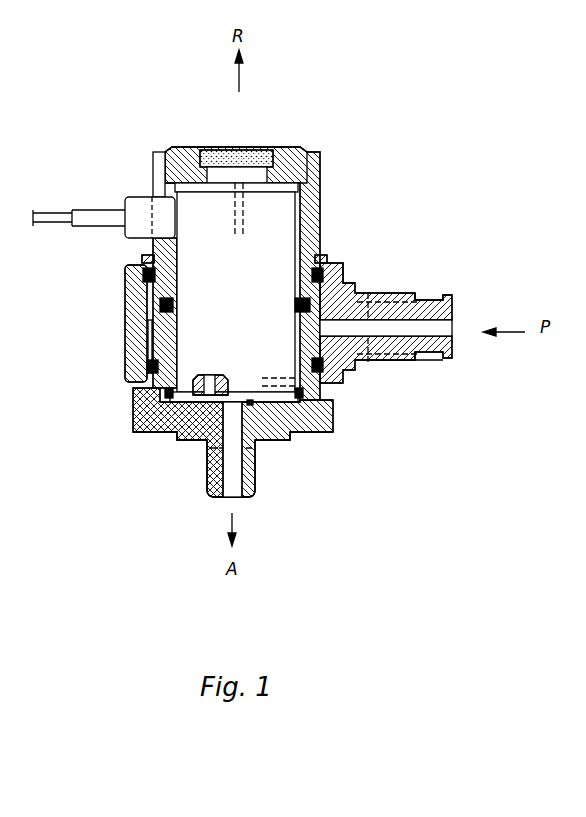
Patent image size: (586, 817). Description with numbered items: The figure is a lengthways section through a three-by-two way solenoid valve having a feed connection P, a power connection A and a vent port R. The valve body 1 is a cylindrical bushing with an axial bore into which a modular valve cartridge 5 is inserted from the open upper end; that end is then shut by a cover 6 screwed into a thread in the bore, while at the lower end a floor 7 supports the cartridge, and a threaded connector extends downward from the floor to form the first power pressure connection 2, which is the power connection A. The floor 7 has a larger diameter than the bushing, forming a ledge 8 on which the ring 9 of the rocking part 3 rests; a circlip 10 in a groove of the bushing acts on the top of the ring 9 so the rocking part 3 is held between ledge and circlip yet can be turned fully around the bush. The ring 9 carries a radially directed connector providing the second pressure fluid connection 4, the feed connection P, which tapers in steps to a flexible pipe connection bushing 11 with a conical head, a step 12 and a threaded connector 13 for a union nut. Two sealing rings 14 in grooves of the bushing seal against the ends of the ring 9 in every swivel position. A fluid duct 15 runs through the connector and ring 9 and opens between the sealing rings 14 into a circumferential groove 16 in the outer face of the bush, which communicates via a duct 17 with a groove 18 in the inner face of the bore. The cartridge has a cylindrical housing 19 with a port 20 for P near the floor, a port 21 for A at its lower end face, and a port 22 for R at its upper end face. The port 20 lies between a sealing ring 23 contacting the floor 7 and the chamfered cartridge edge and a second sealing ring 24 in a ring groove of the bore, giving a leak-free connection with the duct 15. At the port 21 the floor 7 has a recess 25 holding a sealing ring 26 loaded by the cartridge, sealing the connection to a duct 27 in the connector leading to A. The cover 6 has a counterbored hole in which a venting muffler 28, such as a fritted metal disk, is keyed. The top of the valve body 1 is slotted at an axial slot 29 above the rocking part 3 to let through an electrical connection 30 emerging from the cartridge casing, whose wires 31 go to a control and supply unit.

The valve body 1 is at (310, 210).
The first power pressure connection 2 is at (222, 500).
The rocking part 3 is at (370, 363).
The second pressure fluid connection 4 is at (468, 345).
The valve cartridge 5 is at (222, 294).
The cover 6 is at (180, 158).
The floor 7 is at (150, 408).
The ledge 8 is at (133, 393).
The ring 9 is at (133, 287).
The circlip 10 is at (143, 258).
The flexible pipe connection bushing 11 is at (432, 352).
The step 12 is at (425, 298).
The threaded connector 13 is at (398, 292).
The sealing rings 14 is at (325, 262).
The fluid duct 15 is at (397, 372).
The circumferential groove 16 is at (360, 356).
The duct 17 is at (333, 432).
The groove 18 is at (153, 347).
The cylindrical housing 19 is at (147, 430).
The port 20 is at (272, 410).
The port 21 is at (185, 432).
The port 22 is at (238, 205).
The sealing ring 23 is at (303, 400).
The second sealing ring 24 is at (347, 270).
The recess 25 is at (210, 437).
The sealing ring 26 is at (226, 412).
The duct 27 is at (232, 455).
The venting muffler 28 is at (222, 148).
The axial slot 29 is at (158, 163).
The electrical connection 30 is at (138, 205).
The wires 31 is at (55, 212).